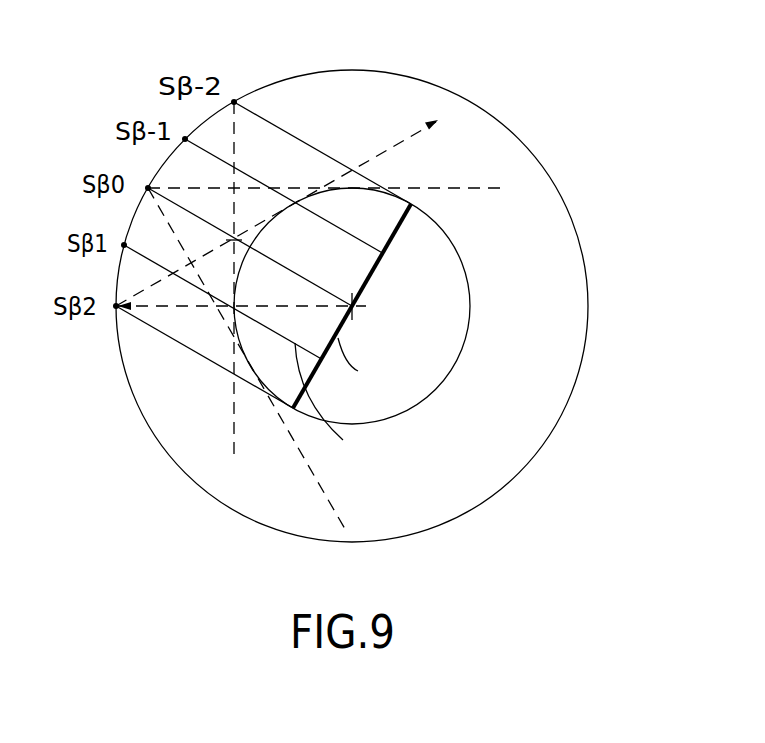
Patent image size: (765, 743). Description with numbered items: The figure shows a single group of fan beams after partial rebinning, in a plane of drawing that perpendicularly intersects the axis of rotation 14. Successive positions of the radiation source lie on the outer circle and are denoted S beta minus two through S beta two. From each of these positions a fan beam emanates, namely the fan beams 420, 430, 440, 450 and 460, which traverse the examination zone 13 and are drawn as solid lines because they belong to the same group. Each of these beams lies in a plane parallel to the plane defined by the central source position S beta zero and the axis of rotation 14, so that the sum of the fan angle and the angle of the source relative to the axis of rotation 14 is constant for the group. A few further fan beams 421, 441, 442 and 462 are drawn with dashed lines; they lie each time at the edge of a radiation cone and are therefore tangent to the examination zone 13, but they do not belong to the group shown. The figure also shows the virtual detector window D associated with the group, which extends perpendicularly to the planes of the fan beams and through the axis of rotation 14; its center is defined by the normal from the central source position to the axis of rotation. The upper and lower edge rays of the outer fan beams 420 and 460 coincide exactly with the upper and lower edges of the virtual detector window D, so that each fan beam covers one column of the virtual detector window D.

The examination zone 13 is at (460, 258).
The axis of rotation 14 is at (356, 311).
The fan beam 420 is at (285, 132).
The fan beam 430 is at (237, 171).
The fan beam 440 is at (313, 283).
The fan beam 460 is at (197, 355).
The fan beam 450 is at (340, 404).
The fan beam 441 is at (313, 475).
The fan beam 442 is at (440, 186).
The fan beam 462 is at (437, 122).
The fan beam 421 is at (234, 427).
The virtual detector window D is at (355, 368).